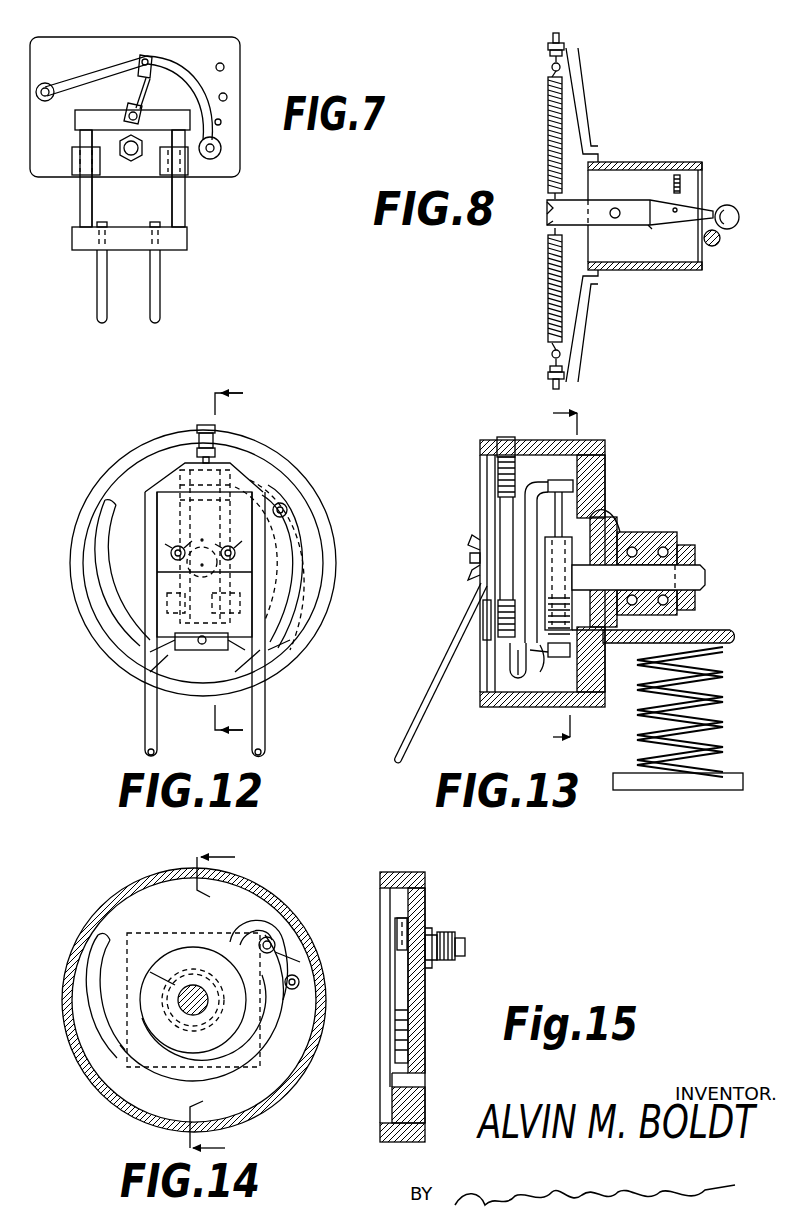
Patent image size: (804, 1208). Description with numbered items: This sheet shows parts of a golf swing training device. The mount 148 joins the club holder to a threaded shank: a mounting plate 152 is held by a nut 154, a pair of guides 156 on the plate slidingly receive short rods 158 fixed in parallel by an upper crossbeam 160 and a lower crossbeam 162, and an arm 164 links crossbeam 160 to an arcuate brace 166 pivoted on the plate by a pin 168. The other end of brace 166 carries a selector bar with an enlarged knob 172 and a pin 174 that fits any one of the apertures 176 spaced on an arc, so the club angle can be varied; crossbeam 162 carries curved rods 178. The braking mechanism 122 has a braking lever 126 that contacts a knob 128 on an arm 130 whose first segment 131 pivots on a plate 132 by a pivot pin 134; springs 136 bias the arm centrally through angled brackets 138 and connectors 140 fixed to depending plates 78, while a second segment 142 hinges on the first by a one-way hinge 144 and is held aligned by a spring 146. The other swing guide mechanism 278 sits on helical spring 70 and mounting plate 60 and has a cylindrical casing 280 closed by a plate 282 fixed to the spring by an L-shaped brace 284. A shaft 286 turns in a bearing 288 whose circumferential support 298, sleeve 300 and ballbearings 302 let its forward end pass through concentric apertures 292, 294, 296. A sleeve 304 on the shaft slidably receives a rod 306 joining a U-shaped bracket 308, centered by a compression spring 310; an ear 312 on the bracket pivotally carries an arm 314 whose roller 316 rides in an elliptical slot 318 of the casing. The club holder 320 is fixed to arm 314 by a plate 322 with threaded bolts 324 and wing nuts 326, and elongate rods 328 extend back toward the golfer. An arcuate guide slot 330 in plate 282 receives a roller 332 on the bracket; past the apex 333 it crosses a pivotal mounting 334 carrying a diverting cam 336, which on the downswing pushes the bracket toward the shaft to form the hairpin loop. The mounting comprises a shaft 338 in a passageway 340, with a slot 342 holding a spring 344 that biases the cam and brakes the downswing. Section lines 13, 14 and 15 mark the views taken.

In FIG. 7, the mount 148 is at (244, 45).
In FIG. 7, the mounting plate 152 is at (216, 67).
In FIG. 7, the nut 154 is at (128, 166).
In FIG. 7, the guides 156 is at (72, 156).
In FIG. 7, the short rods 158 is at (80, 196).
In FIG. 7, the upper crossbeam 160 is at (100, 115).
In FIG. 7, the crossbeam 162 is at (130, 232).
In FIG. 7, the arm 164 is at (144, 86).
In FIG. 7, the arcuate brace 166 is at (110, 70).
In FIG. 7, the pin 168 is at (44, 82).
In FIG. 7, the enlarged knob 172 is at (222, 151).
In FIG. 7, the pin 174 is at (222, 124).
In FIG. 7, the apertures 176 is at (227, 96).
In FIG. 7, the curved rods 178 is at (150, 268).
In FIG. 8, the depending plates 78 is at (625, 160).
In FIG. 8, the braking mechanism 122 is at (684, 164).
In FIG. 8, the braking lever 126 is at (720, 243).
In FIG. 8, the knob 128 is at (729, 205).
In FIG. 8, the arm 130 is at (628, 198).
In FIG. 8, the first segment 131 is at (603, 227).
In FIG. 8, the plate 132 is at (640, 249).
In FIG. 8, the pivot pin 134 is at (615, 208).
In FIG. 8, the springs 136 is at (548, 110).
In FIG. 8, the angled brackets 138 is at (585, 106).
In FIG. 8, the connectors 140 is at (545, 61).
In FIG. 8, the second segment 142 is at (692, 228).
In FIG. 8, the one-way hinge 144 is at (650, 229).
In FIG. 8, the spring 146 is at (688, 185).
In FIG. 12, the section line 13— 13 is at (243, 557).
In FIG. 13, the section line 14— 14 is at (550, 574).
In FIG. 14, the section line 15— 15 is at (225, 998).
In FIG. 12, the swing guide mechanism 278 is at (258, 440).
In FIG. 13, the swing guide mechanism 278 is at (615, 442).
In FIG. 12, the cylindrical casing 280 is at (328, 600).
In FIG. 13, the cylindrical casing 280 is at (587, 440).
In FIG. 14, the cylindrical casing 280 is at (132, 888).
In FIG. 15, the cylindrical casing 280 is at (404, 871).
In FIG. 13, the plate 282 is at (598, 475).
In FIG. 14, the plate 282 is at (205, 914).
In FIG. 15, the plate 282 is at (425, 905).
In FIG. 13, the L-shaped brace 284 is at (700, 630).
In FIG. 14, the L-shaped brace 284 is at (143, 932).
In FIG. 13, the shaft 286 is at (690, 578).
In FIG. 14, the shaft 286 is at (194, 990).
In FIG. 13, the bearing 288 is at (682, 538).
In FIG. 13, the aperture 292 is at (605, 649).
In FIG. 13, the aperture 294 is at (618, 540).
In FIG. 14, the aperture 294 is at (172, 978).
In FIG. 13, the aperture 296 is at (610, 518).
In FIG. 14, the aperture 296 is at (143, 1050).
In FIG. 13, the circumferential support 298 is at (635, 540).
In FIG. 13, the sleeve 300 is at (690, 550).
In FIG. 13, the ballbearings 302 is at (638, 548).
In FIG. 13, the sleeve 304 is at (575, 578).
In FIG. 13, the rod 306 is at (555, 505).
In FIG. 12, the U-shaped bracket 308 is at (160, 652).
In FIG. 13, the U-shaped bracket 308 is at (540, 672).
In FIG. 13, the compression spring 310 is at (556, 660).
In FIG. 13, the ear 312 is at (503, 660).
In FIG. 12, the arm 314 is at (250, 478).
In FIG. 13, the arm 314 is at (497, 480).
In FIG. 12, the roller 316 is at (203, 423).
In FIG. 13, the roller 316 is at (500, 436).
In FIG. 12, the slot 318 is at (118, 665).
In FIG. 13, the slot 318 is at (515, 676).
In FIG. 12, the club holder 320 is at (140, 698).
In FIG. 13, the club holder 320 is at (455, 640).
In FIG. 12, the plate 322 is at (175, 480).
In FIG. 13, the plate 322 is at (496, 520).
In FIG. 13, the threaded bolts 324 is at (470, 558).
In FIG. 12, the wing nuts 326 is at (172, 554).
In FIG. 13, the wing nuts 326 is at (487, 545).
In FIG. 12, the elongate rods 328 is at (150, 515).
In FIG. 13, the elongate rods 328 is at (483, 620).
In FIG. 12, the arcuate guide slot 330 is at (300, 592).
In FIG. 14, the arcuate guide slot 330 is at (190, 1080).
In FIG. 15, the arcuate guide slot 330 is at (400, 1087).
In FIG. 12, the roller 332 is at (192, 651).
In FIG. 13, the roller 332 is at (580, 660).
In FIG. 14, the roller 332 is at (300, 960).
In FIG. 14, the apex 333 is at (255, 920).
In FIG. 12, the pivotal mounting 334 is at (287, 510).
In FIG. 14, the pivotal mounting 334 is at (278, 937).
In FIG. 15, the pivotal mounting 334 is at (397, 945).
In FIG. 12, the diverting cam 336 is at (300, 560).
In FIG. 14, the diverting cam 336 is at (300, 984).
In FIG. 15, the diverting cam 336 is at (395, 985).
In FIG. 15, the shaft 338 is at (432, 952).
In FIG. 15, the passageway 340 is at (428, 940).
In FIG. 15, the slot 342 is at (460, 942).
In FIG. 15, the spring 344 is at (465, 958).
In FIG. 13, the mounting plate 60 is at (728, 774).
In FIG. 13, the helical spring 70 is at (720, 703).